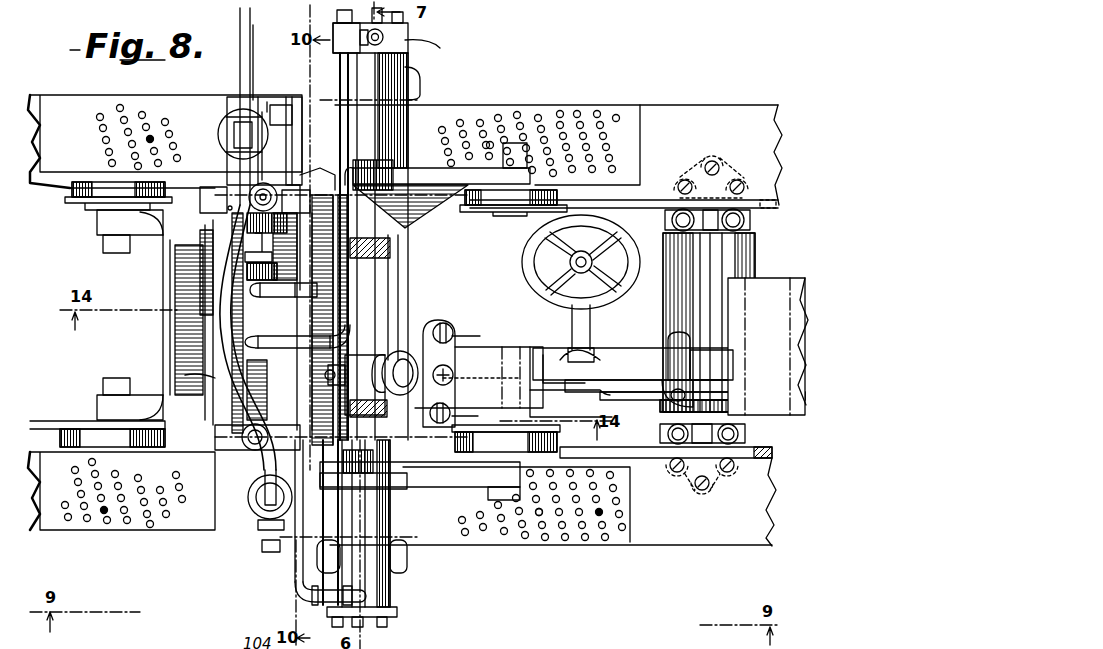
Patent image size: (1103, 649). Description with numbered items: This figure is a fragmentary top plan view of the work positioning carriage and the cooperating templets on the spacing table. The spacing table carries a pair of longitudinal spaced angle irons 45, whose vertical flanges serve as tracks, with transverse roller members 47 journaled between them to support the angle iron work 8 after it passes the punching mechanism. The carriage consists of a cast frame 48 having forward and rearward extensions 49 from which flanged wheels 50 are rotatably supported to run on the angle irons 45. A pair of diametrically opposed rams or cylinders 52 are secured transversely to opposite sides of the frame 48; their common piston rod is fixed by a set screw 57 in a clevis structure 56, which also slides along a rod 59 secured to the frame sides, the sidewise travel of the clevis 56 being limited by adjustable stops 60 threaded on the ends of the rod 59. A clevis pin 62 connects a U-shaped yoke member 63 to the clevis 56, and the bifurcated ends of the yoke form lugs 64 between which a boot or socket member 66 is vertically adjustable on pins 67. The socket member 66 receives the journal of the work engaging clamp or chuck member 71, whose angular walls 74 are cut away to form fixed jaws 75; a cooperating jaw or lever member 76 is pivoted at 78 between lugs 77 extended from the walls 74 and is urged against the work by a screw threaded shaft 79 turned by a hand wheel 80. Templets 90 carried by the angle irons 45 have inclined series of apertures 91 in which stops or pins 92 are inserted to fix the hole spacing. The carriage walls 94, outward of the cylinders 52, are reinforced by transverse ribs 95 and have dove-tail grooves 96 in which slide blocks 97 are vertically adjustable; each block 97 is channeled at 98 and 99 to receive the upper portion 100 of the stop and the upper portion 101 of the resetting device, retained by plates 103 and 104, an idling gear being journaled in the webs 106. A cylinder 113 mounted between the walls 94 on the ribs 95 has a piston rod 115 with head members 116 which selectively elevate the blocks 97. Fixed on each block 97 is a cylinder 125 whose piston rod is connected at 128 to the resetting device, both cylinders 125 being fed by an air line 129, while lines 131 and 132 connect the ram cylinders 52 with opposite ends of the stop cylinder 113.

The work 8 is at (790, 278).
The angle irons 45 is at (775, 140).
The roller members 47 is at (755, 252).
The cast frame 48 is at (168, 334).
The forward and rearward extensions 49 is at (482, 176).
The flanged wheels 50 is at (78, 208).
The rams or cylinders 52 is at (408, 44).
The clevis structure 56 is at (352, 374).
The set screw 57 is at (330, 384).
The rod 59 is at (400, 272).
The adjustable stops 60 is at (403, 224).
The clevis pin 62 is at (395, 352).
The yoke member 63 is at (440, 322).
The lugs 64 is at (452, 328).
The boot or socket member 66 is at (505, 348).
The pins 67 is at (454, 335).
The work engaging clamp or chuck member 71 is at (455, 376).
The walls 74 is at (612, 392).
The fixed jaws 75 is at (747, 406).
The cooperating jaw or lever member 76 is at (604, 352).
The lugs 77 is at (683, 342).
The pivot 78 is at (718, 382).
The screw threaded shaft 79 is at (582, 365).
The hand wheel 80 is at (632, 243).
The templets 90 is at (628, 110).
The apertures 91 is at (563, 112).
The stops or pins 92 is at (152, 136).
The vertical walls 94 is at (214, 452).
The transverse ribs 95 is at (305, 182).
The dove-tail groove 96 is at (228, 195).
The slide block 97 is at (302, 185).
The channel 98 is at (265, 110).
The channel 99 is at (254, 80).
The upper portion of the stop 100 is at (280, 104).
The upper portion of the resetting device 101 is at (272, 552).
The plate 103 is at (252, 528).
The plate 104 is at (230, 96).
The webs or wall 106 is at (267, 100).
The cylinder 113 is at (250, 333).
The piston rod 115 is at (225, 280).
The head members 116 is at (215, 382).
The cylinder 125 is at (226, 128).
The connection 128 is at (300, 130).
The air line 129 is at (246, 24).
The line 131 is at (292, 568).
The line 132 is at (348, 140).